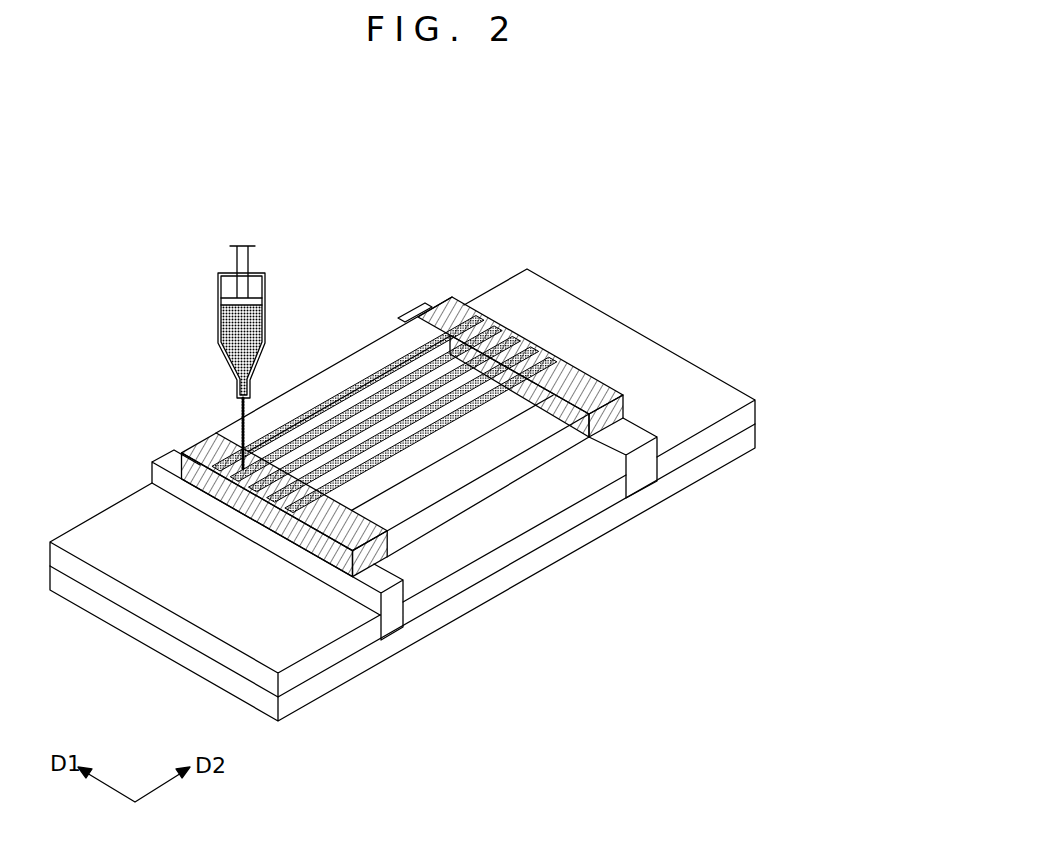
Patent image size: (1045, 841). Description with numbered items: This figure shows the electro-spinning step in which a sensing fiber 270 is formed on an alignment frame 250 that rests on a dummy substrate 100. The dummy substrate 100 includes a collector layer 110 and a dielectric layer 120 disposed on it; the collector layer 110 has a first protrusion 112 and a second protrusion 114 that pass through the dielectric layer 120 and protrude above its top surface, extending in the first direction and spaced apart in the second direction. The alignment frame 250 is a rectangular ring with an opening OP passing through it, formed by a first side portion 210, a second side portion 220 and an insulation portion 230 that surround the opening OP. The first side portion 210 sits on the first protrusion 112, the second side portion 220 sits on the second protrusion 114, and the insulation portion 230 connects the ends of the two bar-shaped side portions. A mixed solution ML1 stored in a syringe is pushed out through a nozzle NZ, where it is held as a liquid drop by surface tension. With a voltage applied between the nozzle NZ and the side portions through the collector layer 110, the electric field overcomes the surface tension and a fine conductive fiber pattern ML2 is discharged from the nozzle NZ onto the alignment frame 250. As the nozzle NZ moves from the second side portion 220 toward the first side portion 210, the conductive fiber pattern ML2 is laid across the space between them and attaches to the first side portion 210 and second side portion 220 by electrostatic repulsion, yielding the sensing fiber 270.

The dummy substrate 100 is at (475, 495).
The collector layer 110 is at (750, 436).
The dielectric layer 120 is at (750, 412).
The first protrusion 112 is at (402, 607).
The second protrusion 114 is at (643, 465).
The first side portion 210 is at (395, 550).
The second side portion 220 is at (589, 437).
The insulation portion 230 is at (487, 485).
The alignment frame 250 is at (441, 468).
The sensing fiber 270 is at (400, 378).
The opening OP is at (503, 418).
The nozzle NZ is at (237, 388).
The mixed solution ML1 is at (218, 327).
The conductive fiber pattern ML2 is at (240, 417).